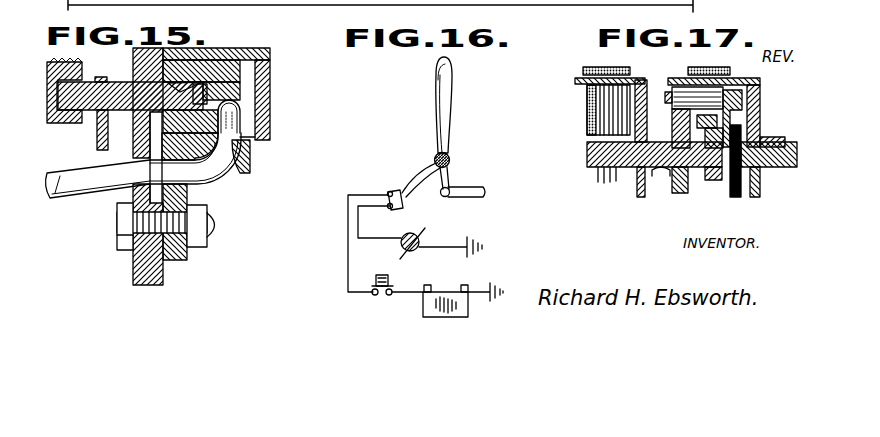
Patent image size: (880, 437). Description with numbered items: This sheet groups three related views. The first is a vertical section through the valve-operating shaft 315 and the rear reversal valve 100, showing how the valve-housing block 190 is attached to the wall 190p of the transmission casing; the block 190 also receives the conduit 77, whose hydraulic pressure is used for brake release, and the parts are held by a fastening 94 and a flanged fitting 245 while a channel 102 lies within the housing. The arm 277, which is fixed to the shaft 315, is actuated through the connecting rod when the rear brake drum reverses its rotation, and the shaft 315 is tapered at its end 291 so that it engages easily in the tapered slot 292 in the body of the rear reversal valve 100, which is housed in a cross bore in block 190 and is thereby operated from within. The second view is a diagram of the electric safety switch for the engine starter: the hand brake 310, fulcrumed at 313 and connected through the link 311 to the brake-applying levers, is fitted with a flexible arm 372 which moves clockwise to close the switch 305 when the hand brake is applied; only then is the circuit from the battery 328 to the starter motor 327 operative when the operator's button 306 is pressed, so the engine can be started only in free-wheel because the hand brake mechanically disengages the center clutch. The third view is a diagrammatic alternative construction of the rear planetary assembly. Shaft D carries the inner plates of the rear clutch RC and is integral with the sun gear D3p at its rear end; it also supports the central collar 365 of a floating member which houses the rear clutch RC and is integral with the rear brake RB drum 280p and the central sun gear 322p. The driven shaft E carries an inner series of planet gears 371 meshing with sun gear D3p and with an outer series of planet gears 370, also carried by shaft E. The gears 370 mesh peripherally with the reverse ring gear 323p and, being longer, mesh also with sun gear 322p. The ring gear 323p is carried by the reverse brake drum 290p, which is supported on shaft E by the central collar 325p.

In FIG. 15, the flange 245 is at (58, 76).
In FIG. 15, the valve-operating shaft 315 is at (123, 90).
In FIG. 15, the arm 277 is at (97, 138).
In FIG. 15, the rear reversal valve 100 is at (262, 73).
In FIG. 15, the tapered slot 292 is at (168, 83).
In FIG. 15, the tapered end 291 is at (193, 95).
In FIG. 15, the cable guide channel 102 is at (241, 111).
In FIG. 15, the valve-housing block 190 is at (255, 142).
In FIG. 15, the wall of the transmission casing 190p is at (137, 268).
In FIG. 15, the conduit 77 is at (68, 184).
In FIG. 15, the bolt 94 is at (218, 220).
In FIG. 16, the hand brake 310 is at (449, 92).
In FIG. 16, the fulcrum 313 is at (450, 158).
In FIG. 16, the link 311 is at (466, 191).
In FIG. 16, the flexible arm 372 is at (420, 177).
In FIG. 16, the switch 305 is at (389, 190).
In FIG. 16, the starter motor 327 is at (420, 236).
In FIG. 16, the operator's button 306 is at (374, 279).
In FIG. 16, the battery 328 is at (428, 300).
In FIG. 17, the rear brake RB is at (583, 71).
In FIG. 17, the rear brake drum 280p is at (577, 83).
In FIG. 17, the rear clutch RC is at (610, 110).
In FIG. 17, the outer planet gears 370 is at (682, 78).
In FIG. 17, the reverse ring gear 323p is at (702, 67).
In FIG. 17, the reverse brake drum 290p is at (728, 78).
In FIG. 17, the inner planet gears 371 is at (733, 103).
In FIG. 17, the driven shaft E is at (780, 144).
In FIG. 17, the shaft D is at (587, 156).
In FIG. 17, the central collar 325p is at (765, 170).
In FIG. 17, the central collar 365 is at (652, 170).
In FIG. 17, the central sun gear 322p is at (682, 193).
In FIG. 17, the sun gear D3p is at (712, 186).